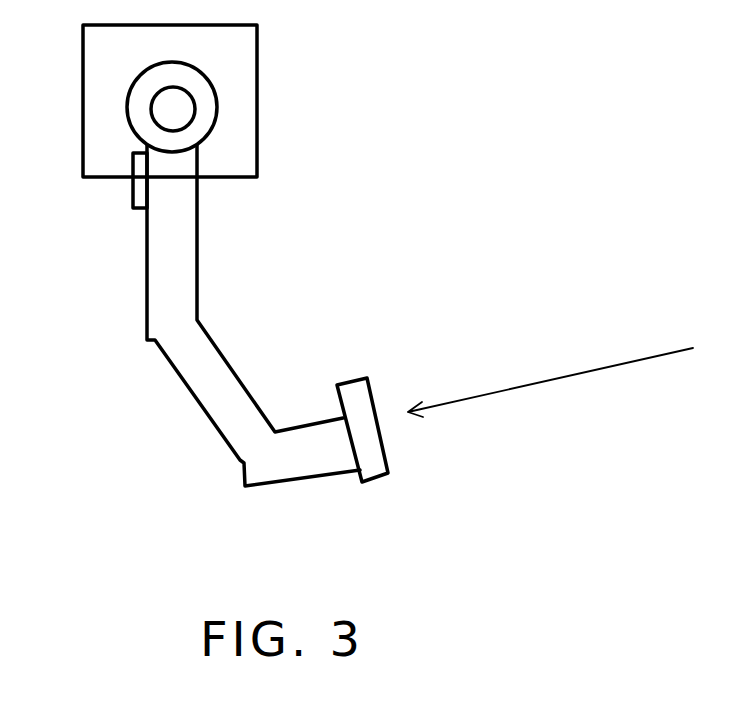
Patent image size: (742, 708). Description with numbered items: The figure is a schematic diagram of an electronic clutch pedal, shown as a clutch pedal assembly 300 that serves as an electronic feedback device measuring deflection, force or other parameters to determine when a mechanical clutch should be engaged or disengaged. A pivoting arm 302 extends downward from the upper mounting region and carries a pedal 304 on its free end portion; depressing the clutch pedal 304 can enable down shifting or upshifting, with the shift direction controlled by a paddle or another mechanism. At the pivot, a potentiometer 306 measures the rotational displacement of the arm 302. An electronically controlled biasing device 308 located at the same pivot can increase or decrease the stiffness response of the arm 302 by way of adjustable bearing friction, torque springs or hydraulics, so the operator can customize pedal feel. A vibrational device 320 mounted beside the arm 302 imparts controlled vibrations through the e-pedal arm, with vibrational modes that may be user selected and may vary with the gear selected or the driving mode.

The clutch pedal assembly 300 is at (370, 277).
The arm 302 is at (188, 263).
The pedal 304 is at (380, 480).
The potentiometer 306 is at (250, 95).
The electronically controlled biasing device 308 is at (190, 95).
The vibrational device 320 is at (135, 208).